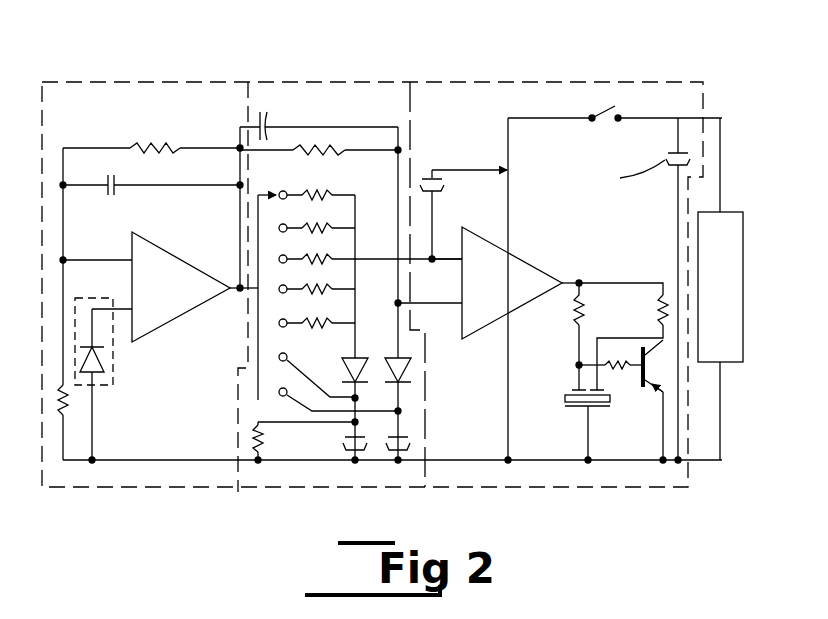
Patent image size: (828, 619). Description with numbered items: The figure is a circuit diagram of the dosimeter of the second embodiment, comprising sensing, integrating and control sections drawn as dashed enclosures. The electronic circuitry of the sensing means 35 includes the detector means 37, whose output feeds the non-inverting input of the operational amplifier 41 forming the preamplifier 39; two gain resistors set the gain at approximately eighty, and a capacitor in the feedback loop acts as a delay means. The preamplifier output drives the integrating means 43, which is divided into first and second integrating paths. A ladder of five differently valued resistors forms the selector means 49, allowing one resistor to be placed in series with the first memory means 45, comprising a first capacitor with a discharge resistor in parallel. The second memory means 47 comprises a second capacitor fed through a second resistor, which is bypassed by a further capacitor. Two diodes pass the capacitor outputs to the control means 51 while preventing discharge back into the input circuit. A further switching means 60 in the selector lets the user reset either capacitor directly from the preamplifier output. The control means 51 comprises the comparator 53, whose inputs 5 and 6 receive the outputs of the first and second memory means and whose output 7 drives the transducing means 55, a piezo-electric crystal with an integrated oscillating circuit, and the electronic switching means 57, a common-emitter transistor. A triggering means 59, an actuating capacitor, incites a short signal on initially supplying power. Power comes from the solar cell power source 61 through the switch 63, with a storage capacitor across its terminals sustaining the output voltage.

The electronic circuitry of the sensing means 35 is at (33, 86).
The detector means 37 is at (102, 366).
The preamplifier 39 is at (390, 287).
The operational amplifier 41 is at (200, 270).
The integrating means 43 is at (478, 266).
The first memory means 45 is at (355, 469).
The second memory means 47 is at (398, 469).
The selector means 49 is at (238, 300).
The control means 51 is at (636, 252).
The comparator 53 is at (523, 262).
The transducing means 55 is at (561, 423).
The electronic switching means 57 is at (667, 378).
The triggering means 59 is at (451, 157).
The further switching means 60 is at (272, 377).
The power source 61 is at (724, 296).
The switch 63 is at (613, 99).
The comparator input 5 is at (443, 257).
The comparator input 6 is at (441, 302).
The comparator output 7 is at (566, 281).